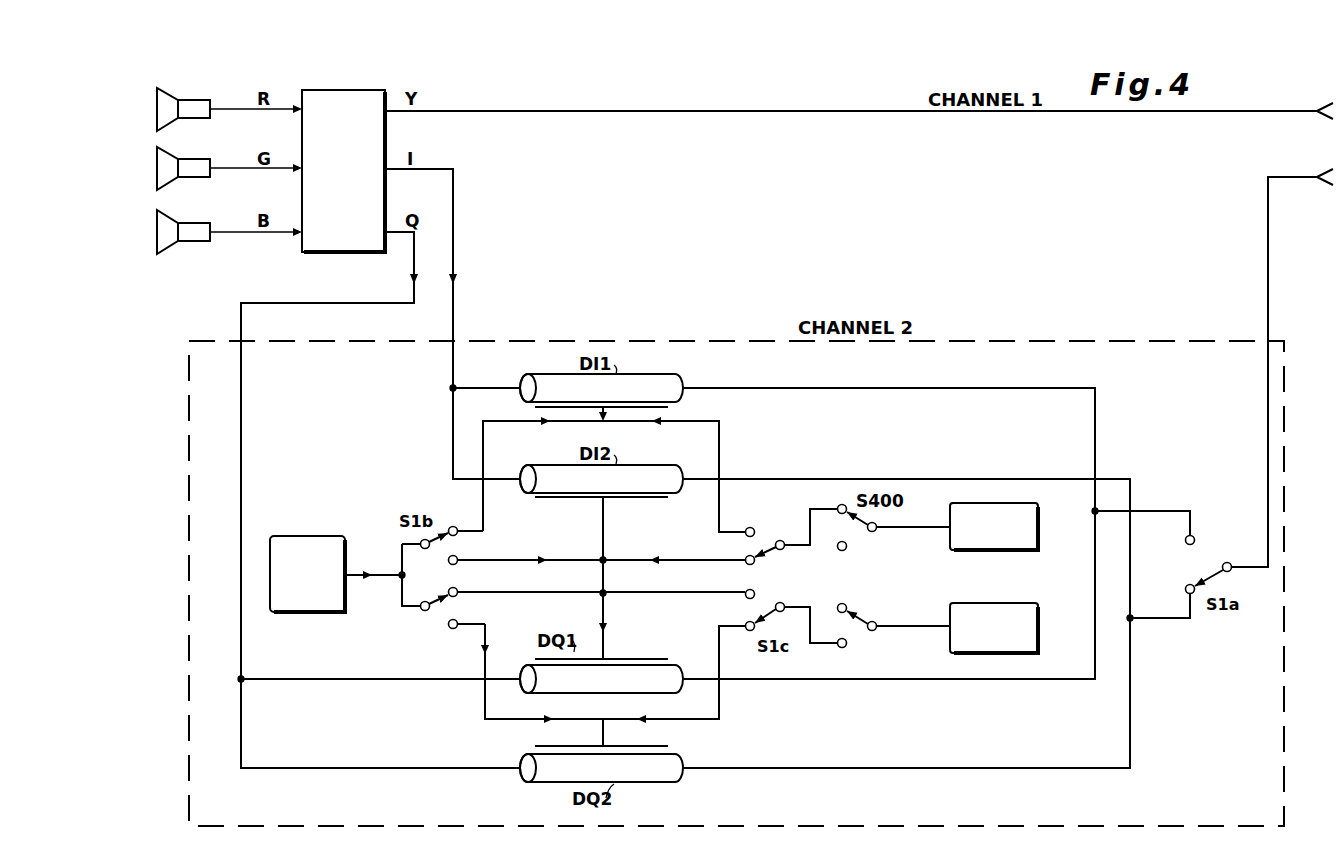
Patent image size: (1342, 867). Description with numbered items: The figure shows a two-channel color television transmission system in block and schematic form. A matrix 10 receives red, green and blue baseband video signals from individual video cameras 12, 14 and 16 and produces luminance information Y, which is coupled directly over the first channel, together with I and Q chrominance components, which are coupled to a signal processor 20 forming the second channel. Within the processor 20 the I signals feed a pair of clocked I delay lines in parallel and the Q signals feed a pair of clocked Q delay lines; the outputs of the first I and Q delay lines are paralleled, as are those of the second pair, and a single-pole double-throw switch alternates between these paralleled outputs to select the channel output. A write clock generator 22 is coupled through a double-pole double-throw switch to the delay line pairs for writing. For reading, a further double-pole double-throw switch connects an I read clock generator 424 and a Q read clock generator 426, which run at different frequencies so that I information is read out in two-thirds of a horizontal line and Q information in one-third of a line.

The matrix 10 is at (345, 254).
The video camera 12 is at (198, 100).
The video camera 14 is at (197, 168).
The video camera 16 is at (197, 229).
The signal processor 20 is at (586, 341).
The write clock generator 22 is at (304, 534).
The I read clock generator 424 is at (950, 548).
The Q read clock generator 426 is at (950, 645).